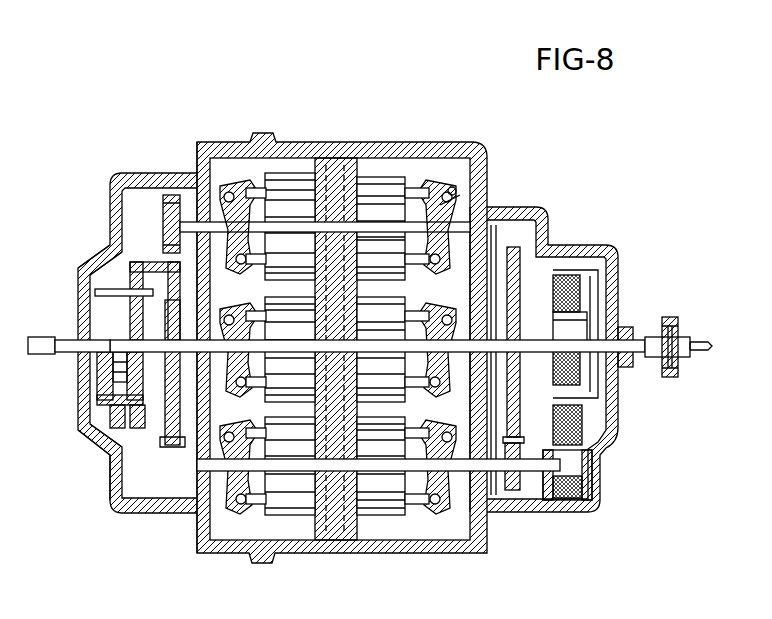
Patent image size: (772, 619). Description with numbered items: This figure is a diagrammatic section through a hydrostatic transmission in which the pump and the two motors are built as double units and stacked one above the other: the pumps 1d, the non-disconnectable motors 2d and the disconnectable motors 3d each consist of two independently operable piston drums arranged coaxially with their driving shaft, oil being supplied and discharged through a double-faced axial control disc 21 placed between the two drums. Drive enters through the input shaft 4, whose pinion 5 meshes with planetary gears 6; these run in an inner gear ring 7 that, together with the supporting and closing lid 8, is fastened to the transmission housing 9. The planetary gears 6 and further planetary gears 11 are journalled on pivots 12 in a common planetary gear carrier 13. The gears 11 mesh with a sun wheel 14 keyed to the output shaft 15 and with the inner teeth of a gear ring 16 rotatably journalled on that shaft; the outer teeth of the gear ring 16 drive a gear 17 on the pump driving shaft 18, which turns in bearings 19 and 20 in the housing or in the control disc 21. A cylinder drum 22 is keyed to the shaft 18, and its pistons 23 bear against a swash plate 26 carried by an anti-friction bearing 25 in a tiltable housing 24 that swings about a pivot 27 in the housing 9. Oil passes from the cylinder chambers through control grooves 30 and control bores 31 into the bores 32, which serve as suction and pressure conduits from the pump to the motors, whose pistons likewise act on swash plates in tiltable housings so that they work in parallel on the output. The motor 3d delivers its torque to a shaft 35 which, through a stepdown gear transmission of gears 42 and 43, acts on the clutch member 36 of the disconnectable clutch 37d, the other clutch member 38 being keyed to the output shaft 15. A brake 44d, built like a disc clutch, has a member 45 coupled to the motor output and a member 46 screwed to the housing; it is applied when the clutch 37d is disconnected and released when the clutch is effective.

The pump unit 1d is at (290, 164).
The first motor 2d is at (271, 299).
The second motor 3d is at (302, 532).
The input shaft 4 is at (40, 338).
The pinion 5 is at (110, 364).
The planetary gears 6 is at (108, 268).
The inner gear ring 7 is at (110, 414).
The supporting and closing lid 8 is at (84, 420).
The transmission housing 9 is at (236, 148).
The planetary gears 11 is at (150, 276).
The pivots 12 is at (97, 292).
The planetary gear carrier 13 is at (100, 393).
The sun wheel 14 is at (135, 381).
The output shaft 15 is at (226, 353).
The gear ring 16 is at (148, 418).
The gear 17 is at (168, 212).
The pump driving shaft 18 is at (325, 224).
The bearing 19 is at (197, 207).
The bearing 20 is at (478, 222).
The control disc 21 is at (352, 206).
The cylinder drum 22 is at (417, 188).
The pistons 23 is at (422, 215).
The tiltable housing 24 is at (445, 213).
The anti-friction bearing 25 is at (455, 201).
The swash plate 26 is at (450, 188).
The pivot 27 is at (406, 347).
The control grooves 30 is at (314, 191).
The control bores 31 is at (353, 208).
The bores 32 is at (337, 348).
The shaft 35 is at (450, 462).
The clutch member 36 is at (552, 320).
The disconnectable clutch 37d is at (600, 405).
The clutch member 38 is at (600, 285).
The gear 42 is at (510, 493).
The gear 43 is at (513, 247).
The brake 44d is at (548, 511).
The brake member 45 is at (593, 471).
The brake member 46 is at (593, 433).